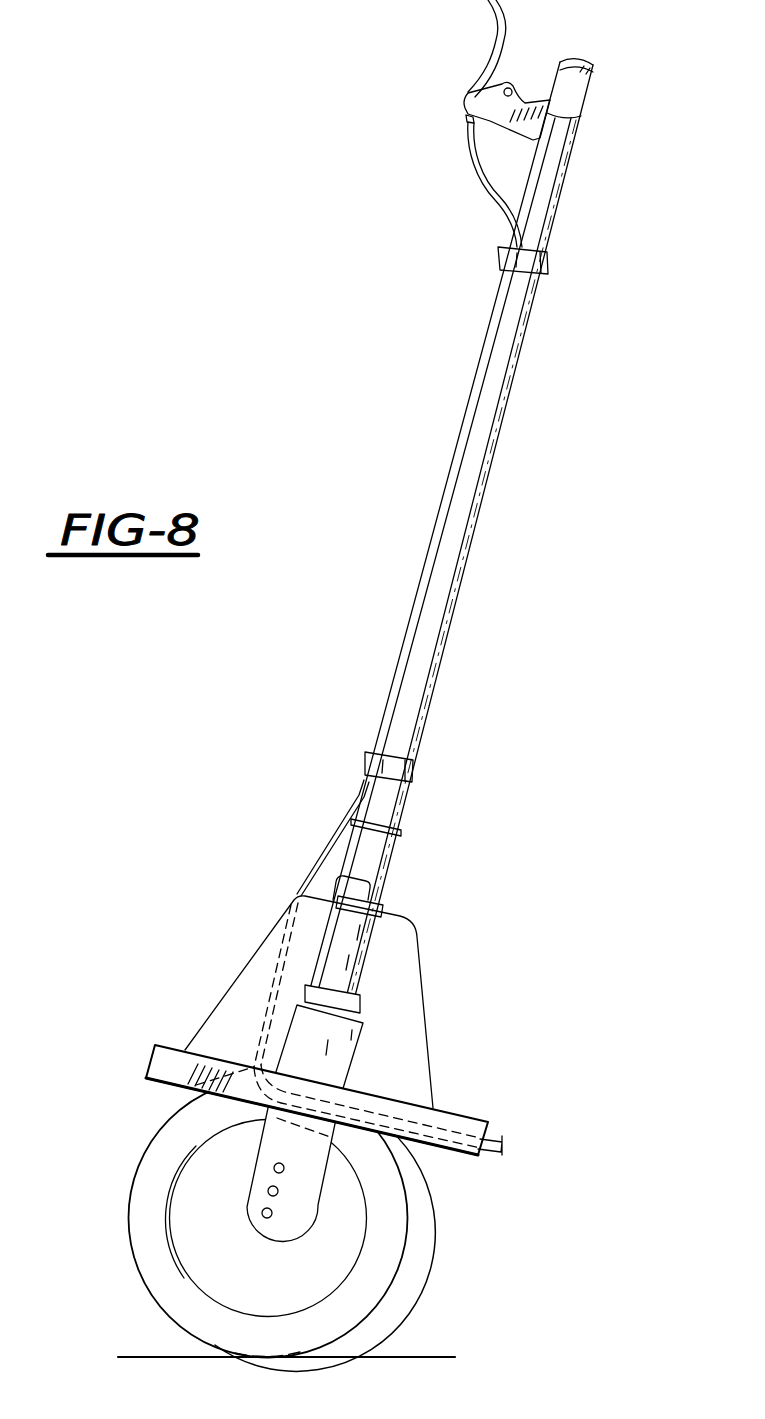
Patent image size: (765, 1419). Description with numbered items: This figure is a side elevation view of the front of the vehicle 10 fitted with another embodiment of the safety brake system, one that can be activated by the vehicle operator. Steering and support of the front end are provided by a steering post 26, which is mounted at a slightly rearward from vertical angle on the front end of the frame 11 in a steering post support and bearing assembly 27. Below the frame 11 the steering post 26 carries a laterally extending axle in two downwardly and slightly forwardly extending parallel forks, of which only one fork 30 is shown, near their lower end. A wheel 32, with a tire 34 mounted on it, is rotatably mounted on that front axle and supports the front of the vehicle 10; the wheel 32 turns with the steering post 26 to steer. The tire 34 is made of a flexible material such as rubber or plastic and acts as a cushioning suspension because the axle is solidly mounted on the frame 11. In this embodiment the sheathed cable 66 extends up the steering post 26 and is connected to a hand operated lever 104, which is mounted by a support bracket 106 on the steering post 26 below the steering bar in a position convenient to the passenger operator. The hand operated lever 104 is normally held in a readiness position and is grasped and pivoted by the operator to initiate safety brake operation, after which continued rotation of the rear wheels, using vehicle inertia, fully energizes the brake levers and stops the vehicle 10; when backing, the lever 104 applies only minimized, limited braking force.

The vehicle 10 is at (180, 1020).
The frame 11 is at (460, 1113).
The steering post 26 is at (515, 376).
The steering post support and bearing assembly 27 is at (422, 985).
The fork 30 is at (263, 1175).
The wheel 32 is at (348, 1233).
The tire 34 is at (380, 1298).
The sheathed cable 66 is at (473, 183).
The hand operated lever 104 is at (490, 23).
The support bracket 106 is at (525, 103).